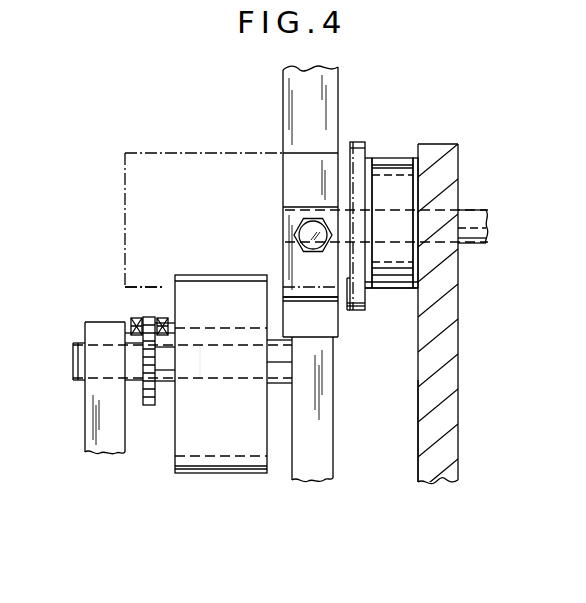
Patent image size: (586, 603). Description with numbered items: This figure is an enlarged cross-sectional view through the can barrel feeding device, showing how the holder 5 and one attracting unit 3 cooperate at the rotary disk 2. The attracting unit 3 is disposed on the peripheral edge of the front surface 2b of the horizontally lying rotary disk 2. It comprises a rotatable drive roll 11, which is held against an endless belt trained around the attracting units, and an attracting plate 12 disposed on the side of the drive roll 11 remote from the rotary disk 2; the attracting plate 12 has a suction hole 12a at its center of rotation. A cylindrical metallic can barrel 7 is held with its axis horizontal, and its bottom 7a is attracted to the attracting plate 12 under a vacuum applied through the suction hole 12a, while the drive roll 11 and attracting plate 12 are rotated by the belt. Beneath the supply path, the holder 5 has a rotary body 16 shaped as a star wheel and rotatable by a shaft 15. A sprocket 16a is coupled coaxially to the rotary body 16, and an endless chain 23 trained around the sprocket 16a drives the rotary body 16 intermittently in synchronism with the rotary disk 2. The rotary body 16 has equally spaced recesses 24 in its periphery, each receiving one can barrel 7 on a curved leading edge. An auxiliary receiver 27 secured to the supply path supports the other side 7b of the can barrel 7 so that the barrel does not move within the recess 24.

The rotary disk 2 is at (466, 175).
The front surface 2b is at (417, 412).
The attracting unit 3 is at (381, 145).
The holder 5 is at (148, 490).
The can barrel 7 is at (219, 151).
The bottom 7a is at (348, 285).
The side 7b is at (164, 287).
The drive roll 11 is at (396, 290).
The attracting plate 12 is at (357, 141).
The suction hole 12a is at (357, 225).
The shaft 15 is at (74, 342).
The rotary body 16 is at (248, 474).
The sprocket 16a is at (150, 400).
The endless chain 23 is at (162, 317).
The recess 24 is at (207, 402).
The auxiliary receiver 27 is at (328, 326).